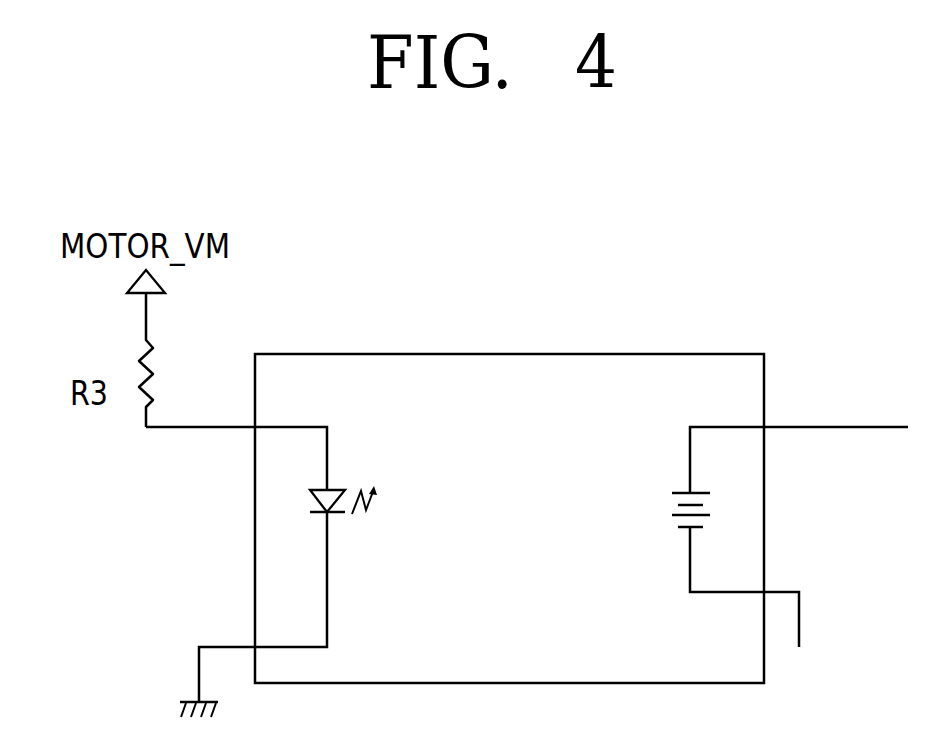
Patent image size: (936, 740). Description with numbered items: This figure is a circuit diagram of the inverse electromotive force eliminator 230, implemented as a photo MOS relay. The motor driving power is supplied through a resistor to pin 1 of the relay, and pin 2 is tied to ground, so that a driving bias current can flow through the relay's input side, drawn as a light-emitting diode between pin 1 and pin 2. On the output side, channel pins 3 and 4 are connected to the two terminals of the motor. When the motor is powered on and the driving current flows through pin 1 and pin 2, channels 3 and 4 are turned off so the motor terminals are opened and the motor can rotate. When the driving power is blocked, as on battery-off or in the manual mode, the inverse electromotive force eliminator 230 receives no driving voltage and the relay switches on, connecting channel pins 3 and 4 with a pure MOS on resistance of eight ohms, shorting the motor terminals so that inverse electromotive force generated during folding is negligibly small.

The inverse electromotive force eliminator 230 is at (508, 353).
The pin # 1 is at (236, 440).
The pin # 2 is at (253, 614).
The channel pin # 3 is at (799, 429).
The channel pin # 4 is at (760, 598).